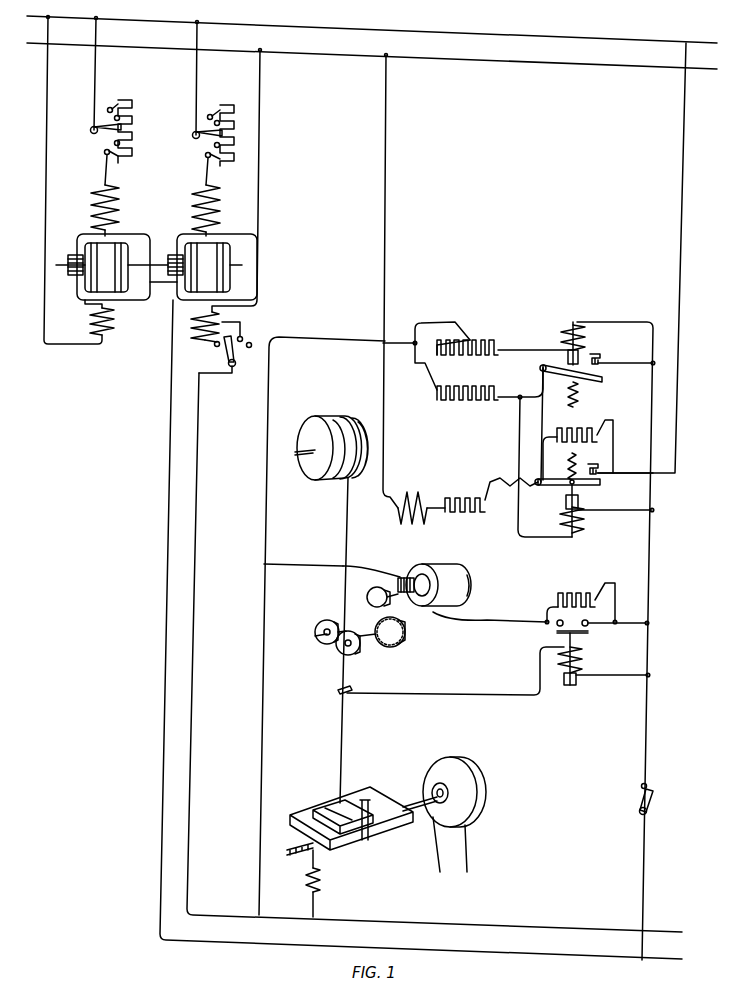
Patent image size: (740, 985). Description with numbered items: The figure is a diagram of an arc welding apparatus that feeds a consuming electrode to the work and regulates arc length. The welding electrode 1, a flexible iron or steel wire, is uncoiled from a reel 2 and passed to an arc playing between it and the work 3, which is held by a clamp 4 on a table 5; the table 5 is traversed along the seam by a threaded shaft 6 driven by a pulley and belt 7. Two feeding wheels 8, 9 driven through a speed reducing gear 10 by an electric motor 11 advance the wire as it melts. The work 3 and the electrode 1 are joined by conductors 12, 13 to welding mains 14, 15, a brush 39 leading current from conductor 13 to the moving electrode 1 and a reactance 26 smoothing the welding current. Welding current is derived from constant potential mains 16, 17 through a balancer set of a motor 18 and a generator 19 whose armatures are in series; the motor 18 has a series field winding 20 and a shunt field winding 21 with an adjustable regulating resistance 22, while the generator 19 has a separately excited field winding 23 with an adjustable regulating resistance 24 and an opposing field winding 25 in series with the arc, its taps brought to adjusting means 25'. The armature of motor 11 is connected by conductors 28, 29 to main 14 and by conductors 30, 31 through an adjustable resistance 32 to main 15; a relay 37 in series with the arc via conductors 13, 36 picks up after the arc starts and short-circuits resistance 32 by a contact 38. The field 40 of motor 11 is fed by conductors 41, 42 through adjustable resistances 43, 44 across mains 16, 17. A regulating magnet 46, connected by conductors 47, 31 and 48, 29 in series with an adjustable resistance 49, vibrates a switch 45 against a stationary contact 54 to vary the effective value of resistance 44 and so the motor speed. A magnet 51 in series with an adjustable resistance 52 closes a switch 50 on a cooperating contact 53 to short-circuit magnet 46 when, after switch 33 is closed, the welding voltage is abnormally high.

The welding electrode 1 is at (343, 748).
The reel 2 is at (346, 416).
The work 3 is at (325, 808).
The clamp 4 is at (370, 842).
The table 5 is at (378, 786).
The threaded shaft 6 is at (300, 852).
The pulley and belt 7 is at (457, 760).
The feeding wheel 8 is at (325, 645).
The feeding wheel 9 is at (357, 652).
The speed reducing gear 10 is at (403, 644).
The electric motor 11 is at (470, 580).
The conductor 12 is at (318, 904).
The conductor 13 is at (462, 690).
The welding current main 14 is at (484, 918).
The welding current main 15 is at (480, 956).
The constant potential main 16 is at (512, 30).
The constant potential main 17 is at (518, 58).
The motor 18 is at (112, 271).
The generator 19 is at (203, 267).
The field winding 20 is at (116, 321).
The field winding 21 is at (122, 200).
The adjustable regulating resistance 22 is at (130, 138).
The separately excited field winding 23 is at (222, 208).
The adjustable regulating resistance 24 is at (225, 116).
The opposing field winding 25 is at (179, 342).
The adjusting means 25' is at (227, 362).
The reactance 26 is at (322, 878).
The conductor 28 is at (356, 566).
The conductor 29 is at (347, 337).
The conductor 30 is at (490, 620).
The conductor 31 is at (647, 760).
The adjustable resistance 32 is at (566, 593).
The switch 33 is at (653, 802).
The conductor 36 is at (622, 675).
The relay 37 is at (570, 686).
The contact 38 is at (555, 633).
The brush 39 is at (348, 694).
The field 40 is at (412, 492).
The conductor 41 is at (386, 236).
The conductor 42 is at (684, 228).
The adjustable resistance 43 is at (462, 498).
The adjustable resistance 44 is at (565, 428).
The switch 45 is at (602, 487).
The regulating magnet 46 is at (582, 527).
The conductor 47 is at (638, 516).
The conductor 48 is at (518, 439).
The adjustable resistance 49 is at (478, 386).
The switch 50 is at (598, 388).
The magnet 51 is at (573, 322).
The adjustable resistance 52 is at (492, 340).
The contact 53 is at (600, 355).
The stationary contact 54 is at (593, 466).